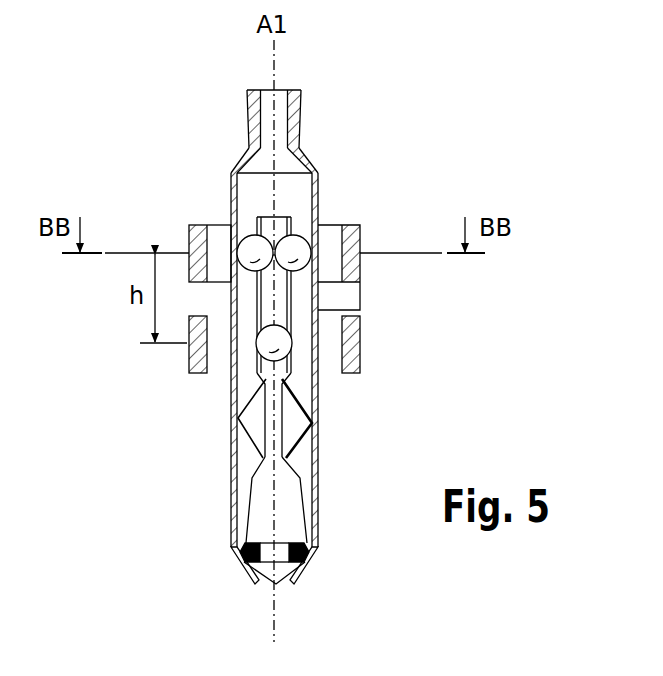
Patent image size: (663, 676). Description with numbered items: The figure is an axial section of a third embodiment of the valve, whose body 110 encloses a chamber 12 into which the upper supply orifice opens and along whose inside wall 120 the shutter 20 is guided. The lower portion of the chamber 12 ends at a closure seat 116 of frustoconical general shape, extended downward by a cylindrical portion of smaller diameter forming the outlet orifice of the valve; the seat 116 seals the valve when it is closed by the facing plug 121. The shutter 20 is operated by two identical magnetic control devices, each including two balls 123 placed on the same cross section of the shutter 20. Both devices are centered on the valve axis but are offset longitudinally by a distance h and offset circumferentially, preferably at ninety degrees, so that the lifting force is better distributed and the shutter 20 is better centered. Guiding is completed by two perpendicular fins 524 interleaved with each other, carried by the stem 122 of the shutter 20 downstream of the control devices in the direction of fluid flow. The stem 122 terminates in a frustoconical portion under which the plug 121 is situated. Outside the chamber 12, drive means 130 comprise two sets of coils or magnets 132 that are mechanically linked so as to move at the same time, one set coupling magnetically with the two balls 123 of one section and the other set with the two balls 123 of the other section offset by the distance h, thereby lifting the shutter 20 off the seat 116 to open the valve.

The body 110 is at (322, 121).
The chamber 12 is at (303, 152).
The balls 123 is at (250, 243).
The drive means 130 is at (351, 222).
The coils or magnets 132 is at (348, 248).
The inside wall 120 is at (318, 395).
The fins 524 is at (242, 416).
The shutter 20 is at (300, 470).
The stem 122 is at (292, 520).
The closure seat 116 is at (300, 573).
The plug 121 is at (278, 584).